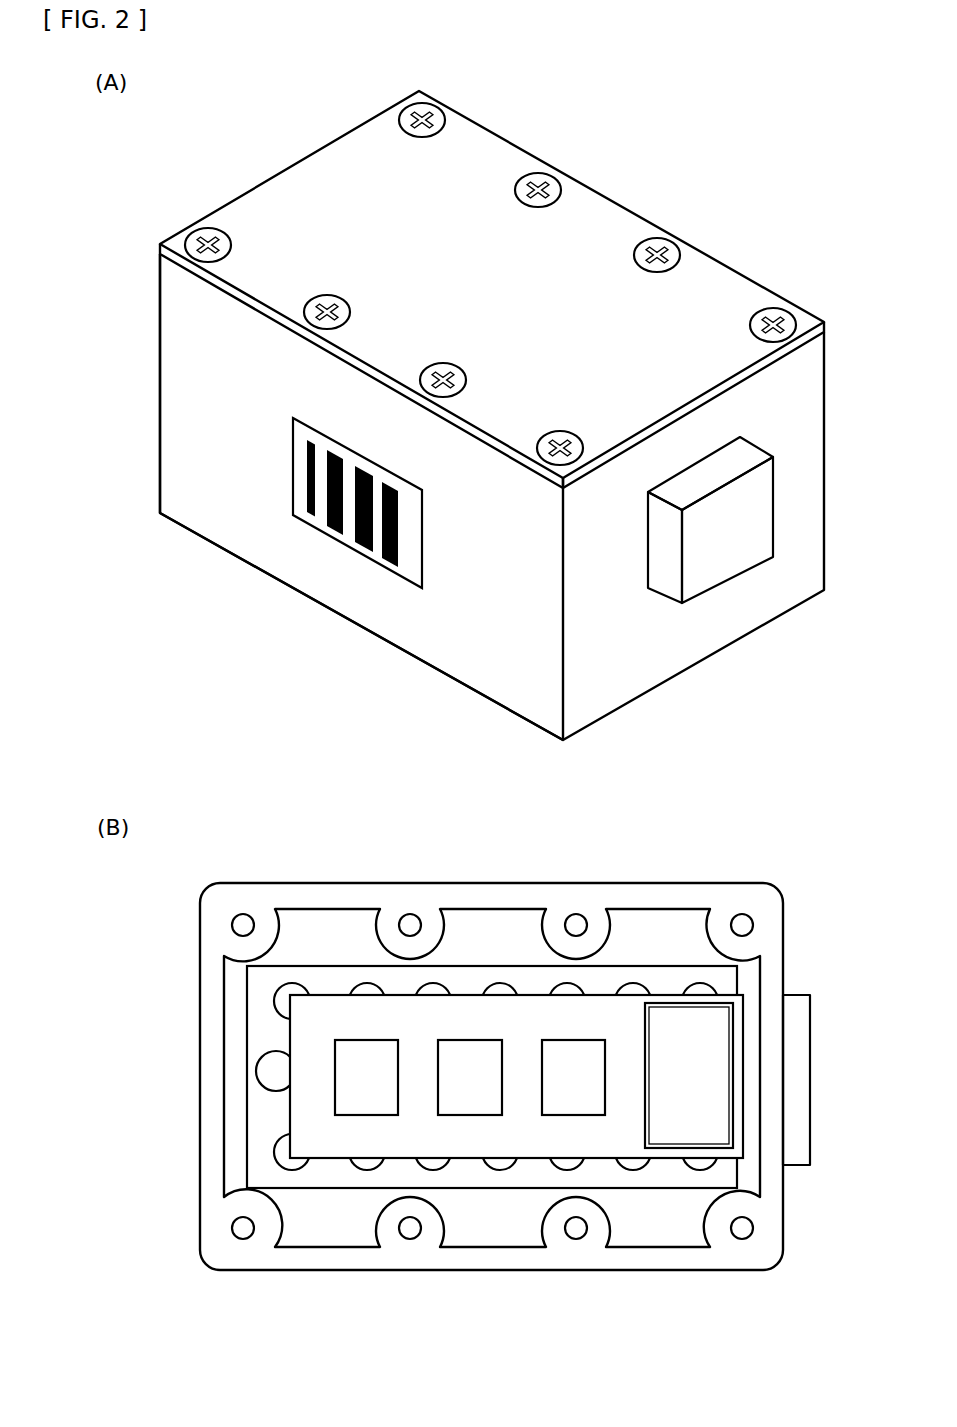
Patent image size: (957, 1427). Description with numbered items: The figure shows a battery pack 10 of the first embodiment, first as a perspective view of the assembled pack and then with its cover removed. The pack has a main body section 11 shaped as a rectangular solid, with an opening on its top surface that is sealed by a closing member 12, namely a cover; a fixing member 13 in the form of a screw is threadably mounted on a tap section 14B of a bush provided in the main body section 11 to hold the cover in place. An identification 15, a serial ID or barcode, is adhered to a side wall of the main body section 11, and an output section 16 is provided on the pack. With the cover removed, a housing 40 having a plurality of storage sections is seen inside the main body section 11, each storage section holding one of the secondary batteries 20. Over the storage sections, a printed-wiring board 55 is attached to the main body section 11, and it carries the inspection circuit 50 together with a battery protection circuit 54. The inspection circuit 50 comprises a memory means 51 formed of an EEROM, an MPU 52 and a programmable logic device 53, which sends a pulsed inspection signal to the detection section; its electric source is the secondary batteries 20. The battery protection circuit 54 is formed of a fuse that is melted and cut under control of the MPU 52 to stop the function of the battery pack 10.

The battery pack 10 is at (342, 587).
The main body section 11 is at (218, 511).
The closing member 12 is at (570, 212).
The fixing member 13 is at (660, 248).
The tap section 14B is at (576, 928).
The identification 15 is at (307, 513).
The output section 16 is at (732, 563).
The secondary battery 20 is at (270, 1064).
The housing 40 is at (263, 1132).
The inspection circuit 50 is at (373, 1025).
The memory means 51 is at (561, 1076).
The MPU 52 is at (353, 1076).
The programmable logic device 53 is at (458, 1076).
The battery protection circuit 54 is at (676, 1075).
The printed-wiring board 55 is at (500, 1020).